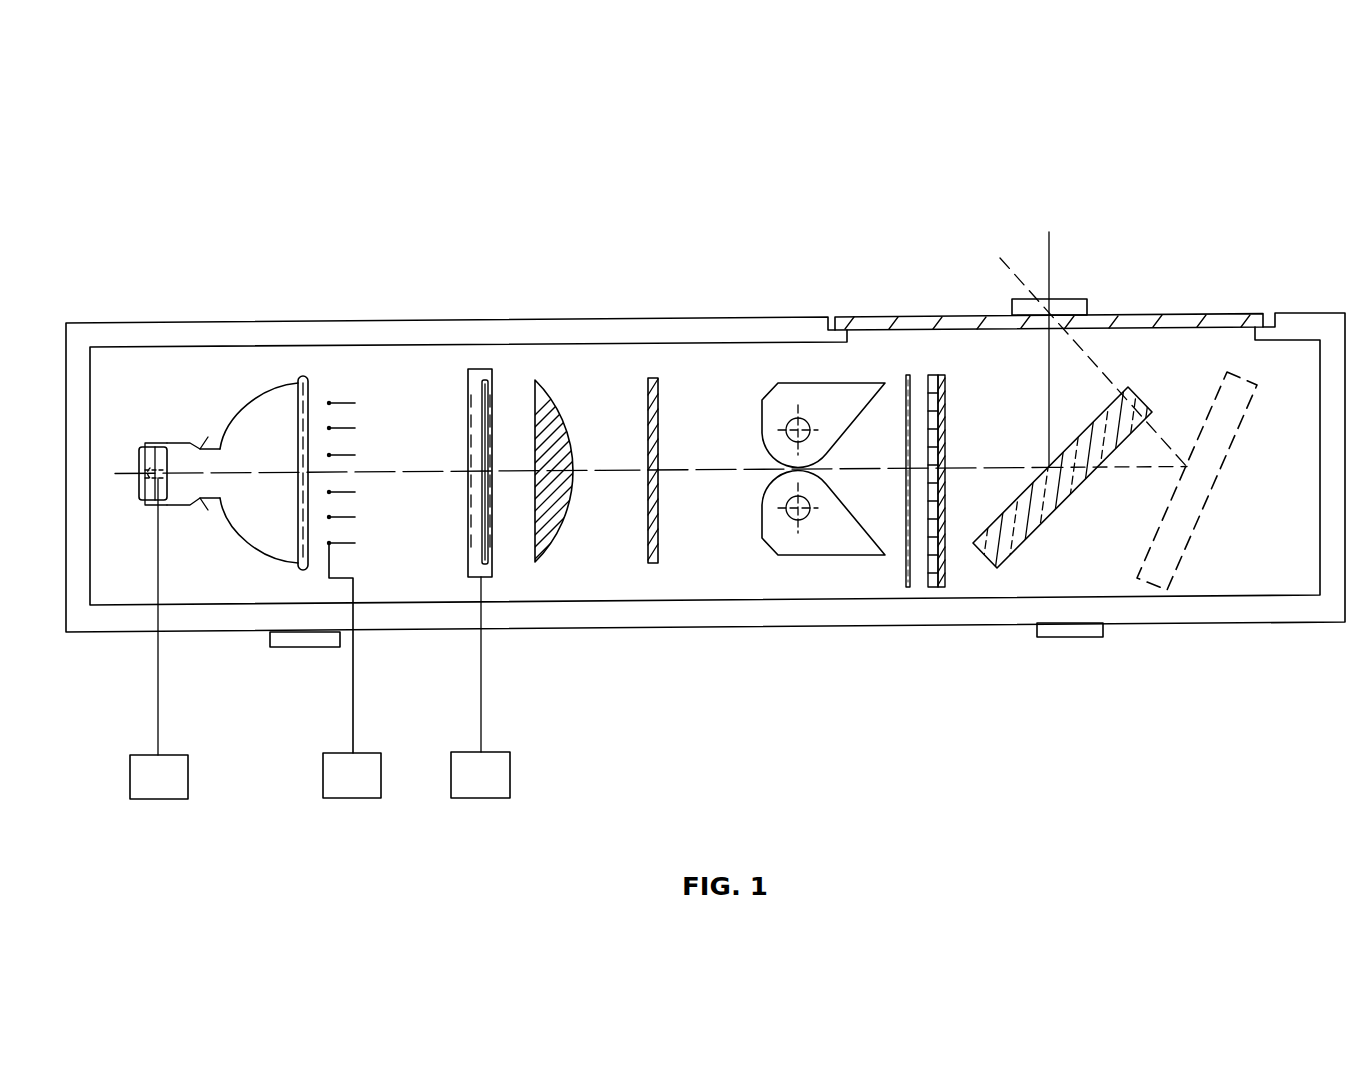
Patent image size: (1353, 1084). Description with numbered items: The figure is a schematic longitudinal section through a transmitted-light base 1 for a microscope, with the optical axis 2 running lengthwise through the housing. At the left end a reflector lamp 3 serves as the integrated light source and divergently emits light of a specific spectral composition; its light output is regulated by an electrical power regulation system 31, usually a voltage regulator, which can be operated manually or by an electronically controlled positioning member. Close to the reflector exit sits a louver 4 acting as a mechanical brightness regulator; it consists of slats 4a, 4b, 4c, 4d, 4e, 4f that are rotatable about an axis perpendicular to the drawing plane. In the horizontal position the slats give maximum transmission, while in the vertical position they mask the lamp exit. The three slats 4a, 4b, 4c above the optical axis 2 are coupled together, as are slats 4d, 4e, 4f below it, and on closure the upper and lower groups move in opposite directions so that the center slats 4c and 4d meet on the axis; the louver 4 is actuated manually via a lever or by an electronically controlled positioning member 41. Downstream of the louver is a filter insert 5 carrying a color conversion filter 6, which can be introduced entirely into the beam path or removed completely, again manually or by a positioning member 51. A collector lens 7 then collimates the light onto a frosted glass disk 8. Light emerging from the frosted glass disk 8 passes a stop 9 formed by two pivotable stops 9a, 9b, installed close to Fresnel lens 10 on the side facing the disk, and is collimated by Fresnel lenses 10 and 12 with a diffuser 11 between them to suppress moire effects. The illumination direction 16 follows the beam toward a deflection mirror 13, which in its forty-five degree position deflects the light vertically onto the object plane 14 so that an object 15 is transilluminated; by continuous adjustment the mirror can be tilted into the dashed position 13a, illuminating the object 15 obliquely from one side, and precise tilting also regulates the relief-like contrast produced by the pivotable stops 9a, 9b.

The transmitted-light base 1 is at (218, 170).
The optical axis 2 is at (432, 470).
The reflector lamp 3 is at (247, 403).
The louver 4 is at (383, 504).
The slat 4a is at (346, 402).
The slat 4b is at (355, 428).
The slat 4c is at (355, 455).
The slat 4d is at (355, 492).
The slat 4e is at (355, 518).
The slat 4f is at (355, 545).
The filter insert 5 is at (482, 368).
The color conversion filter 6 is at (490, 397).
The collector lens 7 is at (557, 400).
The frosted glass disk 8 is at (652, 377).
The stop 9 is at (798, 471).
The pivotable stop 9a is at (786, 394).
The pivotable stop 9b is at (784, 553).
The Fresnel lens 10 is at (907, 375).
The diffuser 11 is at (933, 375).
The Fresnel lens 12 is at (944, 375).
The deflection mirror 13 is at (1018, 553).
The tilted position of deflection mirror 13a is at (1177, 542).
The object plane 14 is at (1230, 313).
The object 15 is at (1070, 297).
The illumination direction 16 is at (615, 470).
The electrical power regulation system 31 is at (146, 778).
The electronically controlled positioning member 41 is at (353, 776).
The electronically controlled positioning member 51 is at (488, 773).